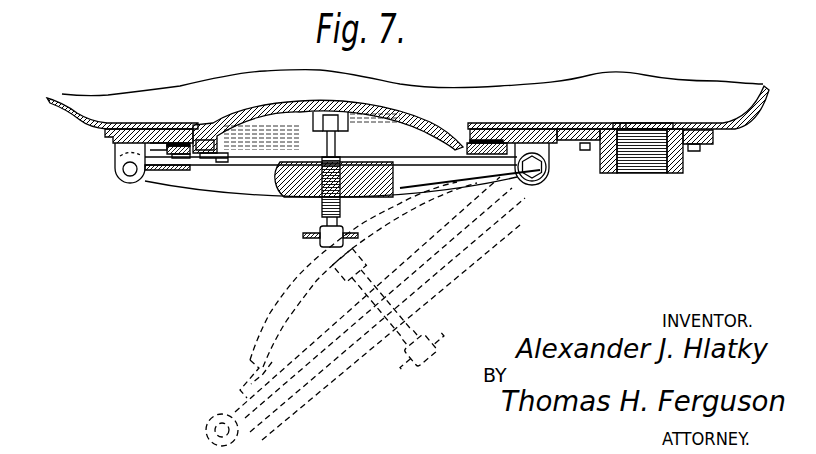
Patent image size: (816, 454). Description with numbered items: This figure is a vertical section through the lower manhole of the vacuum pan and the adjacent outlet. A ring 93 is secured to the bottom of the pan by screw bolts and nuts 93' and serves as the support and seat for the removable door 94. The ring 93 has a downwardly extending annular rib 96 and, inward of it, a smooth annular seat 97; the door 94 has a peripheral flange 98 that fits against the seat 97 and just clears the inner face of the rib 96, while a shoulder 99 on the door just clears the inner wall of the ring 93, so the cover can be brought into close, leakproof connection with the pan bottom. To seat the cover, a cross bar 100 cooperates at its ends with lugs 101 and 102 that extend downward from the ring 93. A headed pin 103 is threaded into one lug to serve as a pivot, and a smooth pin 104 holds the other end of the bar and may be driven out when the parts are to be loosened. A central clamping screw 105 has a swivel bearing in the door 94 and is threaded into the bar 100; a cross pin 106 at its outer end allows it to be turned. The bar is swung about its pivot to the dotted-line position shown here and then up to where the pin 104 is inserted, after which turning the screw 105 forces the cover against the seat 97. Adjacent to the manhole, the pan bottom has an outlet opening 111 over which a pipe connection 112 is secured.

The ring 93 is at (149, 121).
The screw bolts and nuts 93' is at (535, 120).
The removable door 94 is at (268, 103).
The annular rib 96 is at (165, 155).
The annular seat 97 is at (181, 158).
The peripheral flange 98 is at (170, 157).
The shoulder 99 is at (214, 120).
The cross bar 100 is at (272, 190).
The lug 101 is at (550, 155).
The lug 102 is at (115, 156).
The retaining pin 103 is at (542, 182).
The retaining pin 104 is at (126, 173).
The central clamping screw 105 is at (340, 157).
The cross pin 106 is at (318, 238).
The opening 111 is at (641, 122).
The pipe connection 112 is at (604, 174).